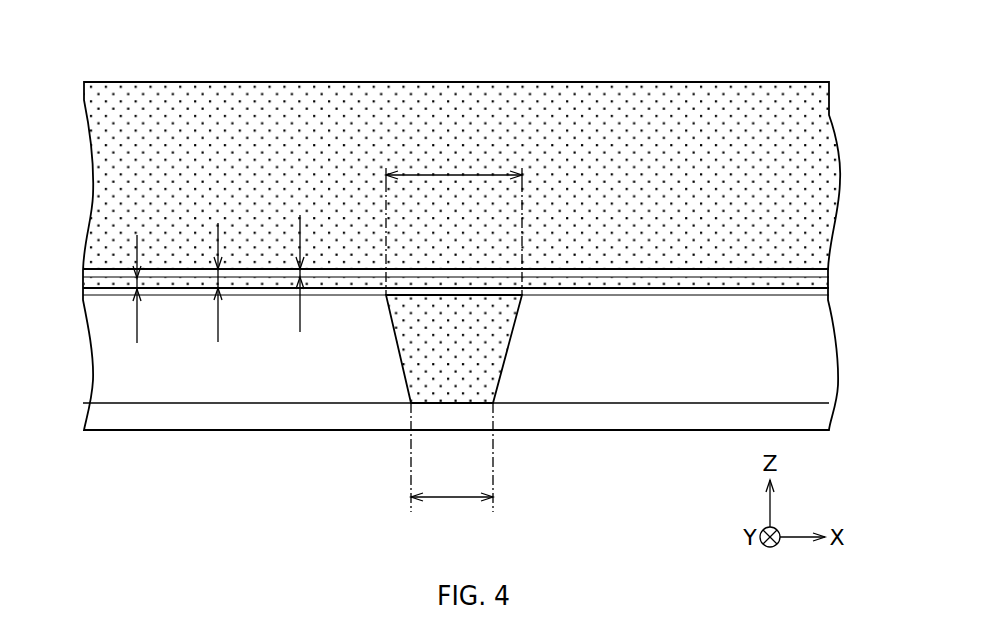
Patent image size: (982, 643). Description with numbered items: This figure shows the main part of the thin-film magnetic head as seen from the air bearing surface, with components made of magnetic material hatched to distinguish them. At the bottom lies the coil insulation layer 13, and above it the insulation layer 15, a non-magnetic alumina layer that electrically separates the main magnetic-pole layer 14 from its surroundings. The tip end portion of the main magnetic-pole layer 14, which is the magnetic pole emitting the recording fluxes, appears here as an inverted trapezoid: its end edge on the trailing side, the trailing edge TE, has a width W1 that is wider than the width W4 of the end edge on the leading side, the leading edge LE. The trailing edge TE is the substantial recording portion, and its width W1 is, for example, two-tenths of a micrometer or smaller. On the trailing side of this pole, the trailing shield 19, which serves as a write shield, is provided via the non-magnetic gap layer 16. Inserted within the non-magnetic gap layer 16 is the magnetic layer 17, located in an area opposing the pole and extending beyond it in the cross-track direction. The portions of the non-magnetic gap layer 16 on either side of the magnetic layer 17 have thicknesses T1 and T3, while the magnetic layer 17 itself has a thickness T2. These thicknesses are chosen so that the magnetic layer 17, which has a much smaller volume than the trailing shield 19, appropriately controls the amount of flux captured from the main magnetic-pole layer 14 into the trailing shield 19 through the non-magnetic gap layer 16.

The coil insulation layer 13 is at (174, 418).
The main magnetic-pole layer 14 is at (473, 390).
The insulation layer 15 is at (259, 390).
The non-magnetic gap layer 16 is at (645, 290).
The magnetic layer 17 is at (734, 283).
The trailing shield 19 is at (180, 92).
The thickness T1 is at (137, 291).
The thickness T2 is at (222, 282).
The thickness T3 is at (305, 275).
The width W1 is at (455, 174).
The width W4 is at (452, 498).
The trailing edge TE is at (467, 295).
The leading edge LE is at (453, 404).